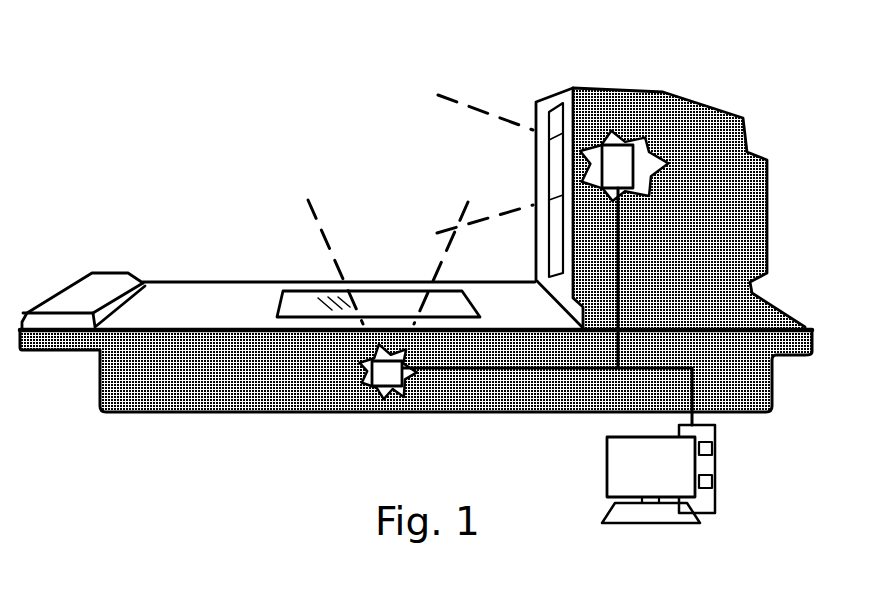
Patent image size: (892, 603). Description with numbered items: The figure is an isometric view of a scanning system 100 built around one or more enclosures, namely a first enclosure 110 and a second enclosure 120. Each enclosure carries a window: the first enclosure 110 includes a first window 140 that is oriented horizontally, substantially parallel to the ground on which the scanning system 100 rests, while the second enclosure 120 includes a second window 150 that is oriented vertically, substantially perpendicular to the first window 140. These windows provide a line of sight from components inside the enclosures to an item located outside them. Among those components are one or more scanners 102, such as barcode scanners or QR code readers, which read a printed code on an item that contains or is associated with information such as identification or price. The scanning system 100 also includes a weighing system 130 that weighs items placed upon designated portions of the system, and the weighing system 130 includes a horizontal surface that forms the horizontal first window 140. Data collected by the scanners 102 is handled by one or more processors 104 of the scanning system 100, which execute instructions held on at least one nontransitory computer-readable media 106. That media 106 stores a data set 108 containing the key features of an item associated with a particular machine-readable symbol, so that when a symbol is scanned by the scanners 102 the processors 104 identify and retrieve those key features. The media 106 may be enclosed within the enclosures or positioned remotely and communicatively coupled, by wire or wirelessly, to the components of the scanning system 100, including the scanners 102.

The scanning system 100 is at (416, 274).
The scanners 102 is at (527, 258).
The processors 104 is at (692, 476).
The nontransitory computer-readable media 106 is at (741, 459).
The data set 108 is at (741, 501).
The first enclosure 110 is at (416, 378).
The second enclosure 120 is at (689, 175).
The weighing system 130 is at (339, 246).
The first window 140 is at (378, 268).
The second window 150 is at (524, 208).